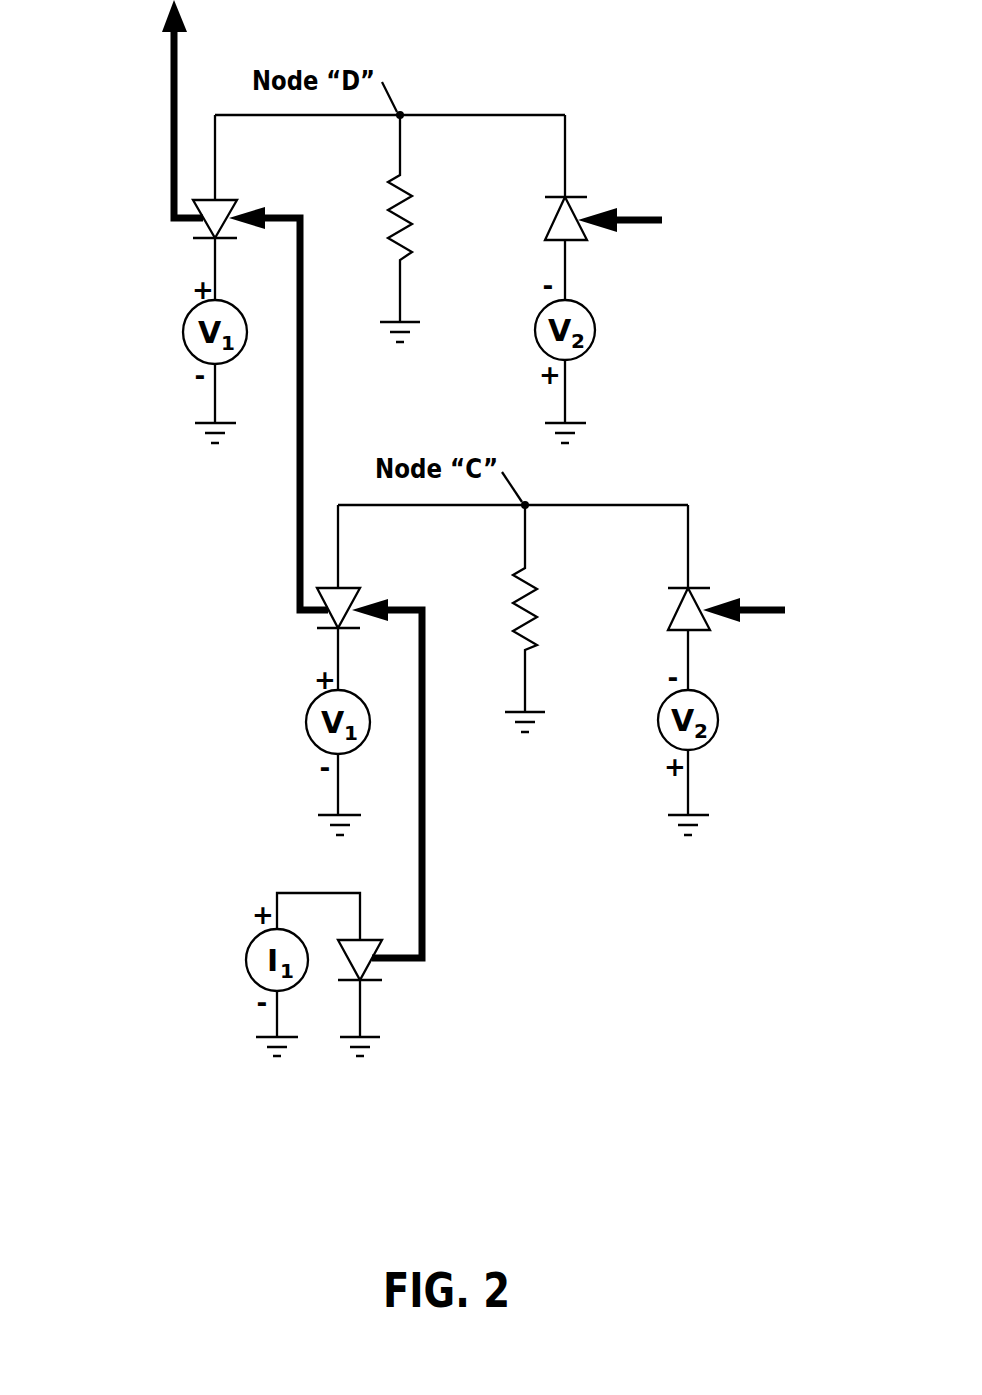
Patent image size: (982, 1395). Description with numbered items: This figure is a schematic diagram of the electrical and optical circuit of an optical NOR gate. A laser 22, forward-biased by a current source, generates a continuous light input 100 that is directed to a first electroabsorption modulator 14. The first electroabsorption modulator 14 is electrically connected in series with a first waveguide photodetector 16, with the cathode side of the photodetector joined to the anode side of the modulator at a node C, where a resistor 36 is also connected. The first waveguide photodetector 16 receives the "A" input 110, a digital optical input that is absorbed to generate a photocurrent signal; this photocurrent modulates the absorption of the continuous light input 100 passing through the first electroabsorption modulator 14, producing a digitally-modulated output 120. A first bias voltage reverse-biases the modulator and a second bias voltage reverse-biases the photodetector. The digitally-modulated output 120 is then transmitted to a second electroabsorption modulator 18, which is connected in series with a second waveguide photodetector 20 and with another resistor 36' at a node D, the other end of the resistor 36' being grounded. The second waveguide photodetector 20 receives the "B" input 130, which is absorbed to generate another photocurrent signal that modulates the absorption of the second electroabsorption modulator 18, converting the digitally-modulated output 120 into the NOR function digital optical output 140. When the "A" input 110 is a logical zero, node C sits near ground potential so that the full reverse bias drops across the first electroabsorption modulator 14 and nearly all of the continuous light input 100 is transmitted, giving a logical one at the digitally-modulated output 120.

The NOR function digital optical output 140 is at (173, 106).
The second electroabsorption modulator 18 is at (187, 238).
The resistor 36' is at (451, 228).
The second waveguide photodetector 20 is at (592, 187).
The "B" input 130 is at (658, 239).
The digitally-modulated output 120 is at (297, 457).
The first electroabsorption modulator 14 is at (310, 630).
The resistor 36 is at (575, 618).
The first waveguide photodetector 16 is at (715, 580).
The "A" input 110 is at (782, 631).
The continuous light input 100 is at (422, 795).
The laser 22 is at (390, 982).